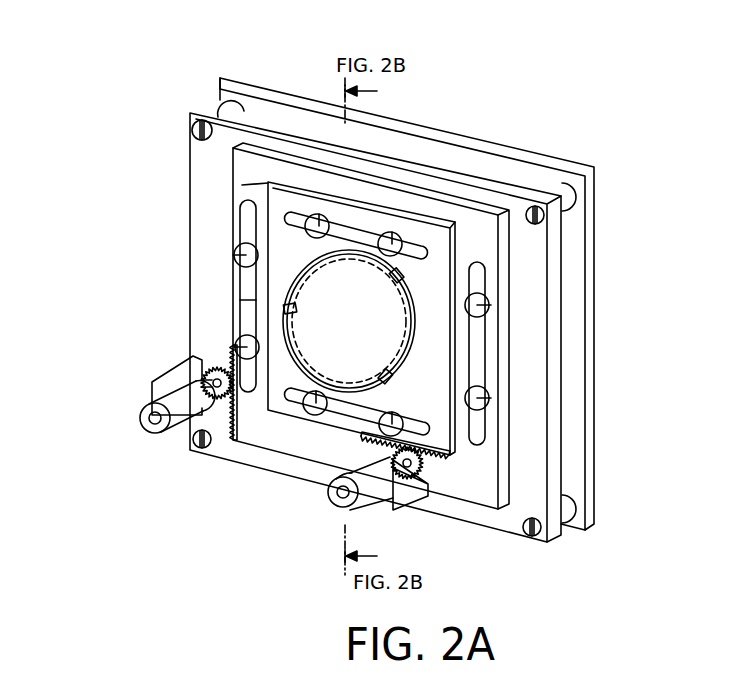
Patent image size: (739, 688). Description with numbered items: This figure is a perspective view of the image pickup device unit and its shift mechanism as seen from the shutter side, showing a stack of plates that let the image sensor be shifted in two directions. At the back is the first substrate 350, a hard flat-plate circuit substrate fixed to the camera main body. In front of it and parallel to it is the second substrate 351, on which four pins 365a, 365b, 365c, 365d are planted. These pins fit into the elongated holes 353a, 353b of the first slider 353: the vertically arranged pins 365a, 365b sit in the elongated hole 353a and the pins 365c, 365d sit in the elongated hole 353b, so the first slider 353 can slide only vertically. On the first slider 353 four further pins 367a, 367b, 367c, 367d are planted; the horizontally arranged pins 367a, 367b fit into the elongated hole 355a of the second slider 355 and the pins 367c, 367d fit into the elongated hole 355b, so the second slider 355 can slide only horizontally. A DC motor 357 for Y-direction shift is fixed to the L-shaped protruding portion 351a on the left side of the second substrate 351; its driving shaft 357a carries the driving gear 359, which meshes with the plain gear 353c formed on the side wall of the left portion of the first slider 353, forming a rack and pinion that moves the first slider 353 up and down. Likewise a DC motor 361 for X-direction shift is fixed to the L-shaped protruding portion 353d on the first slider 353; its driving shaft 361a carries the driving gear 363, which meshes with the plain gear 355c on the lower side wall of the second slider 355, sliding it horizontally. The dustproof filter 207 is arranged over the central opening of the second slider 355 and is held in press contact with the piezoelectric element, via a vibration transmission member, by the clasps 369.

The dustproof filter 207 is at (242, 185).
The first substrate 350 is at (255, 98).
The second substrate 351 is at (294, 152).
The L-shaped protruding portion 351a is at (155, 388).
The first slider 353 is at (498, 262).
The elongated hole 353a is at (490, 355).
The elongated hole 353b is at (250, 225).
The plain gear 353c is at (250, 382).
The L-shaped protruding portion 353d is at (393, 500).
The second slider 355 is at (413, 223).
The elongated hole 355a is at (470, 240).
The elongated hole 355b is at (338, 420).
The plain gear 355c is at (380, 462).
The DC motor 357 is at (140, 418).
The driving shaft 357a is at (213, 374).
The driving gear 359 is at (230, 358).
The DC motor 361 is at (331, 500).
The driving shaft 361a is at (410, 480).
The driving gear 363 is at (433, 460).
The pin 365a is at (483, 305).
The pin 365b is at (490, 397).
The pin 365c is at (243, 252).
The pin 365d is at (243, 340).
The pin 367a is at (323, 213).
The pin 367b is at (391, 232).
The pin 367c is at (312, 410).
The pin 367d is at (385, 432).
The clasp 369 is at (540, 158).